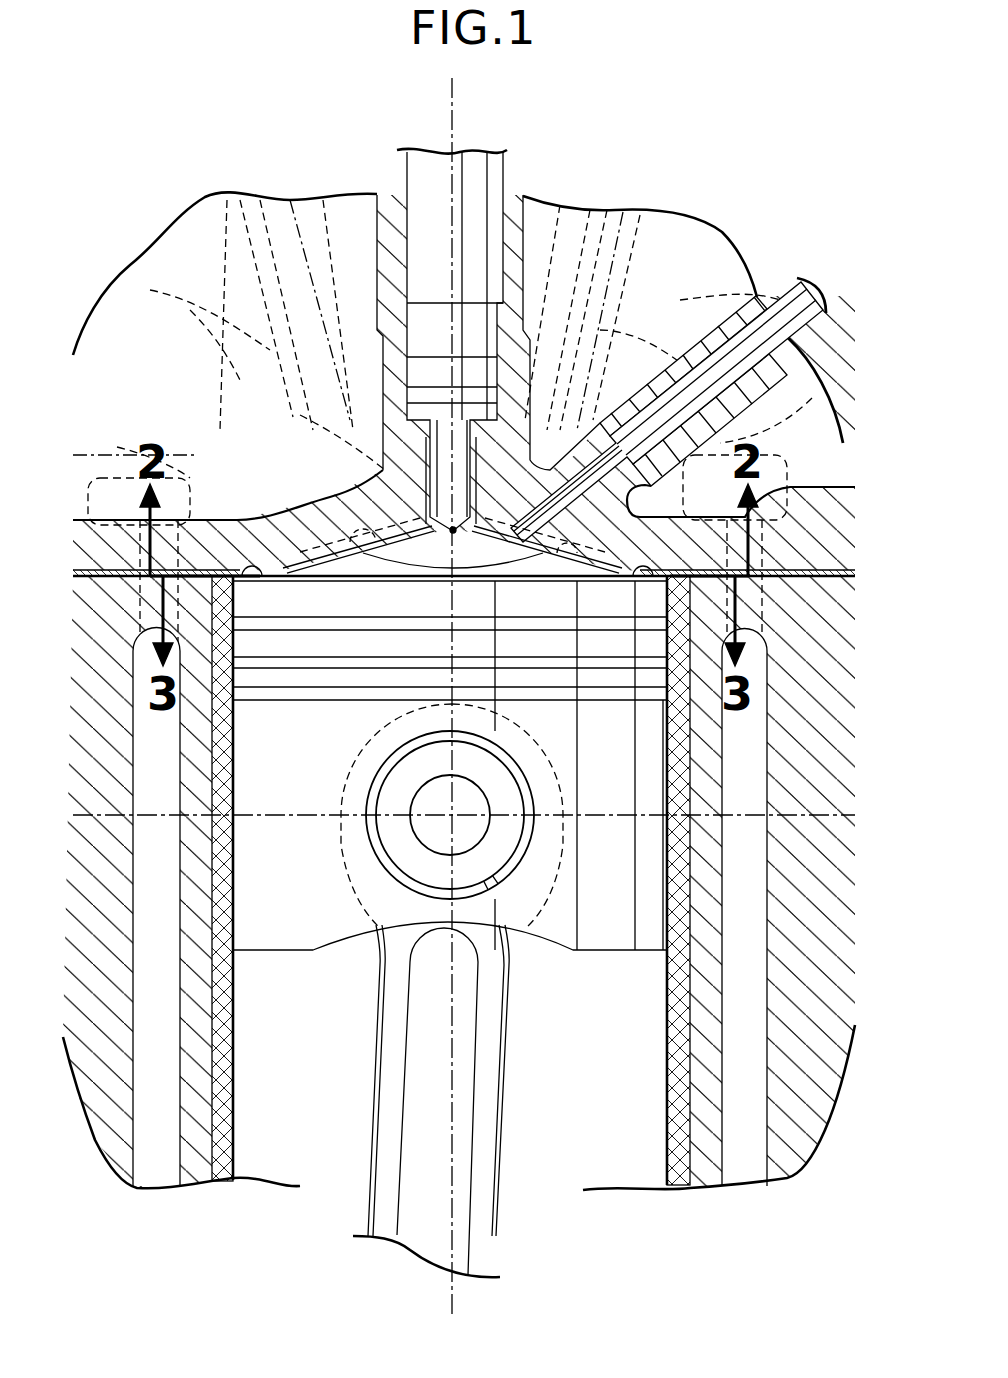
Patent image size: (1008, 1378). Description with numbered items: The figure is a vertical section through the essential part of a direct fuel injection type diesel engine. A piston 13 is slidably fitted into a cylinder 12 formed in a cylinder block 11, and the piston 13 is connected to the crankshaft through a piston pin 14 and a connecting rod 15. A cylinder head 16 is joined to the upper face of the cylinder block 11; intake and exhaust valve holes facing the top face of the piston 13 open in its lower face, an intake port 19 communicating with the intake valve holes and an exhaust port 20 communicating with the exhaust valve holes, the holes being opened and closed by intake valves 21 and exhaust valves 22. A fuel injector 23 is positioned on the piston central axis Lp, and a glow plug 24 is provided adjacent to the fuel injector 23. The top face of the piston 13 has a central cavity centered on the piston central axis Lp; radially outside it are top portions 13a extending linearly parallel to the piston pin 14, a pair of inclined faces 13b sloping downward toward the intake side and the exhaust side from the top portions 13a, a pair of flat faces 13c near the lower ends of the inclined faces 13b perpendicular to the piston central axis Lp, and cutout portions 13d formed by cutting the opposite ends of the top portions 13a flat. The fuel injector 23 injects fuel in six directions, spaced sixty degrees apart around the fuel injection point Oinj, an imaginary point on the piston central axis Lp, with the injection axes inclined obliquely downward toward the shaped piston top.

The cylinder block 11 is at (800, 1122).
The cylinder 12 is at (672, 1010).
The piston 13 is at (263, 965).
The top portions 13a is at (418, 533).
The inclined faces 13b is at (567, 550).
The flat faces 13c is at (637, 572).
The cutout portions 13d is at (467, 552).
The piston pin 14 is at (427, 800).
The connecting rod 15 is at (487, 1083).
The cylinder head 16 is at (820, 507).
The intake port 19 is at (812, 398).
The exhaust port 20 is at (117, 447).
The intake valves 21 is at (585, 378).
The exhaust valves 22 is at (300, 417).
The fuel injector 23 is at (420, 180).
The glow plug 24 is at (782, 297).
The fuel injection point Oinj is at (393, 483).
The piston central axis Lp is at (443, 1127).